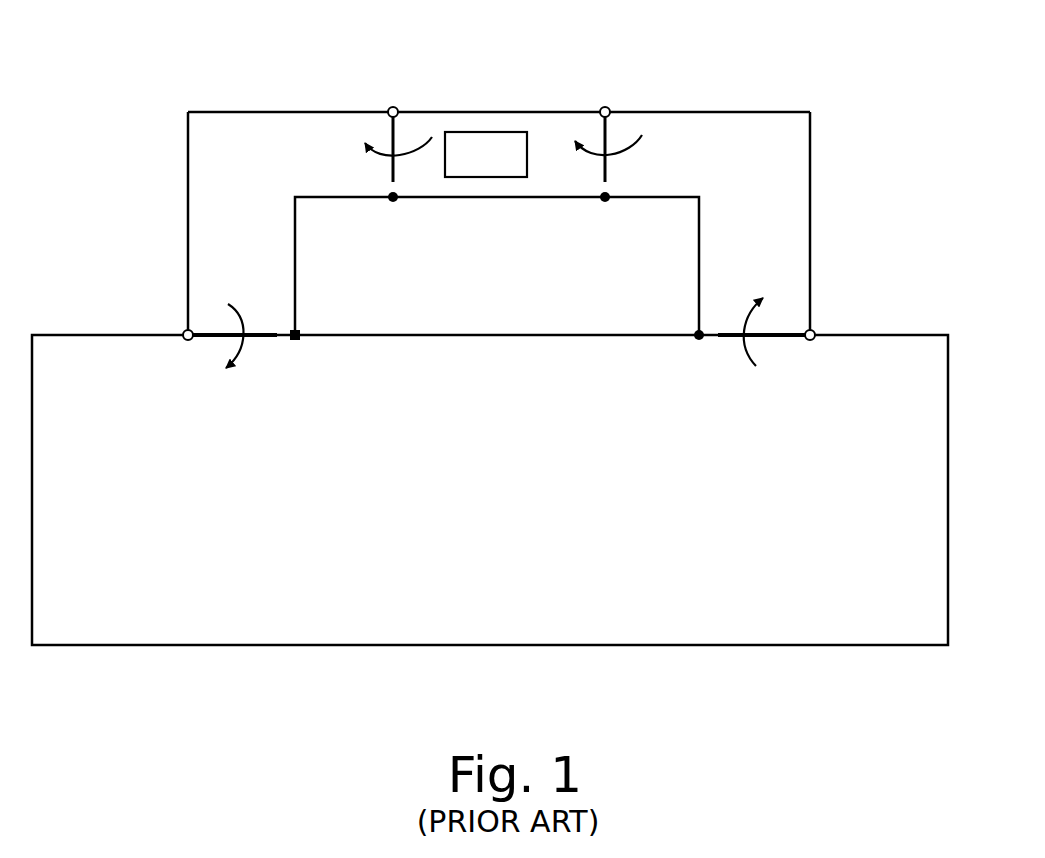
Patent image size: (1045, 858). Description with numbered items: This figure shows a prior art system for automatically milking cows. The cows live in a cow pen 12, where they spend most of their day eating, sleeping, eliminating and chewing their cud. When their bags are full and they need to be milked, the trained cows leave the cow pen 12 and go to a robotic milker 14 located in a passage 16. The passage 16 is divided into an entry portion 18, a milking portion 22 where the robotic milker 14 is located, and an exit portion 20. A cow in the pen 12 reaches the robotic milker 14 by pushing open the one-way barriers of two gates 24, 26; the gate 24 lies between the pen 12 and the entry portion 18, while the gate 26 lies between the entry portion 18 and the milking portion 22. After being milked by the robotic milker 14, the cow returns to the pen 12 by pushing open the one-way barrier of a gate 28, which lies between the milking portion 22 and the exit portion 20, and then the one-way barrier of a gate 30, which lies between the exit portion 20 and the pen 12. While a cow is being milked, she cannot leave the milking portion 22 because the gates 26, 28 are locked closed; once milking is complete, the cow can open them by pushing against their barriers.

The cow pen 12 is at (510, 517).
The robotic milker 14 is at (505, 167).
The passage 16 is at (592, 93).
The entry portion 18 is at (786, 272).
The exit portion 20 is at (217, 235).
The milking portion 22 is at (470, 118).
The gate 24 is at (780, 332).
The gate 26 is at (608, 128).
The gate 28 is at (393, 132).
The gate 30 is at (217, 334).